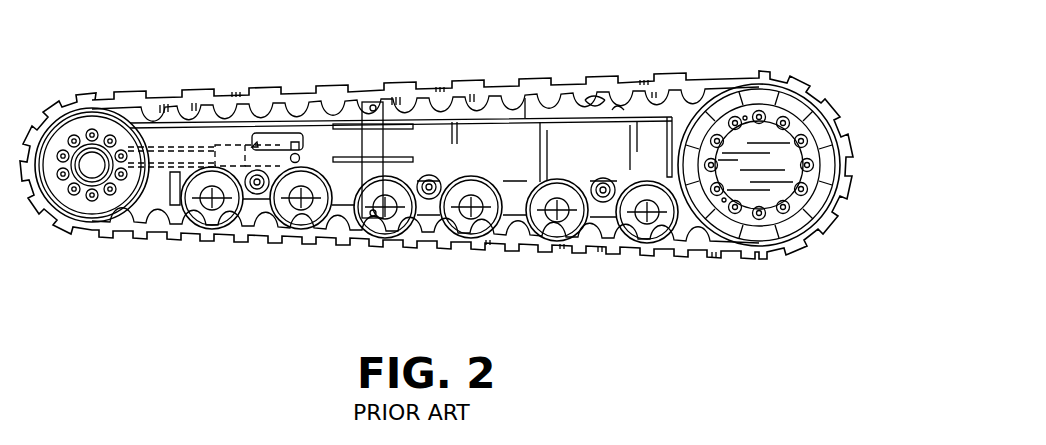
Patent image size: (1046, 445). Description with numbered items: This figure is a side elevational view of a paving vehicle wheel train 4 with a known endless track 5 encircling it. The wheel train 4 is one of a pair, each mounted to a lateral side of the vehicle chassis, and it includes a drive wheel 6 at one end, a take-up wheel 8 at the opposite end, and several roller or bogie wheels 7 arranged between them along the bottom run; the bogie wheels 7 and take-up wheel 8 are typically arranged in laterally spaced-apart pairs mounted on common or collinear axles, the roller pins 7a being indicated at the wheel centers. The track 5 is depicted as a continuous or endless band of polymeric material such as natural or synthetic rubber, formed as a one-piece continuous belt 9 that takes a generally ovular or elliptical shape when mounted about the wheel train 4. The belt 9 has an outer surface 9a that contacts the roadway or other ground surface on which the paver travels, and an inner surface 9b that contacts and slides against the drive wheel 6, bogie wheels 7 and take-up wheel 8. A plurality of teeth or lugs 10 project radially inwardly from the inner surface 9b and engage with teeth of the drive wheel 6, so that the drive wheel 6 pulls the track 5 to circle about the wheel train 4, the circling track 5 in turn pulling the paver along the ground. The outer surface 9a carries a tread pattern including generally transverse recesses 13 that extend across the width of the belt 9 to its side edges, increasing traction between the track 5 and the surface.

The wheel train 4 is at (163, 195).
The endless track 5 is at (270, 82).
The drive wheel 6 is at (760, 225).
The bogie wheels 7 is at (208, 226).
The roller pins 7a is at (298, 200).
The take-up wheel 8 is at (92, 130).
The continuous belt 9 is at (402, 88).
The outer surface 9a is at (537, 98).
The inner surface 9b is at (607, 108).
The lugs 10 is at (303, 110).
The transverse recesses 13 is at (182, 98).